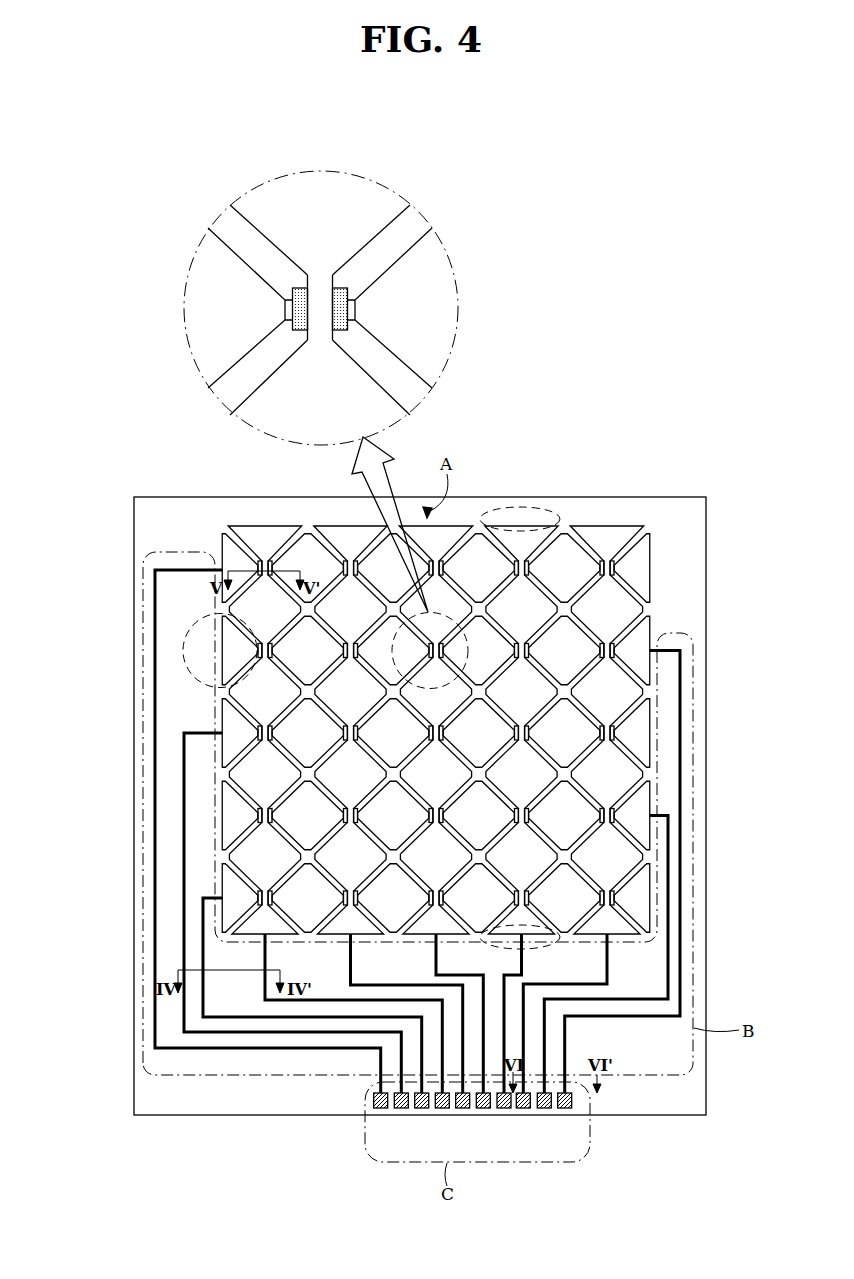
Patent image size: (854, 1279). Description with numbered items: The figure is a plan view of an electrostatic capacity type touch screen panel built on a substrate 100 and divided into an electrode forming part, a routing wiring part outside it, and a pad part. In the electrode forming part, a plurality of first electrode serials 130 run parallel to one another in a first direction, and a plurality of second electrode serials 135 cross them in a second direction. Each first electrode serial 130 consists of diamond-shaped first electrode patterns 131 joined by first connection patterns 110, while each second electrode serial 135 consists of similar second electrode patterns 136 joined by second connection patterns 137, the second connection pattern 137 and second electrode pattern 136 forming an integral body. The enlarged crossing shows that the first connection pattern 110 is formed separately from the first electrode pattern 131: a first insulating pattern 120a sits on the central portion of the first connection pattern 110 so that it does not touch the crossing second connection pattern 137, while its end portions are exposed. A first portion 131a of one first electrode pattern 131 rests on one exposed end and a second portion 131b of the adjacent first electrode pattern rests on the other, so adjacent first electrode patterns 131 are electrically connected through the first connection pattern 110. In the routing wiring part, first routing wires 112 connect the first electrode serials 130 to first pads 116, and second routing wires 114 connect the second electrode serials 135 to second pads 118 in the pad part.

The substrate 100 is at (707, 1091).
The first connection pattern 110 is at (607, 558).
The first routing wires 112 is at (153, 662).
The second routing wires 114 is at (268, 962).
The first pads 116 is at (428, 1112).
The second pads 118 is at (530, 1112).
The first insulating pattern 120a is at (262, 338).
The first electrode serials 130 is at (498, 688).
The first electrode patterns 131 is at (183, 310).
The first portion of the first electrode pattern 131a is at (285, 300).
The second portion of the first electrode pattern 131b is at (355, 300).
The second electrode serials 135 is at (522, 507).
The second electrode patterns 136 is at (268, 200).
The second connection patterns 137 is at (319, 292).